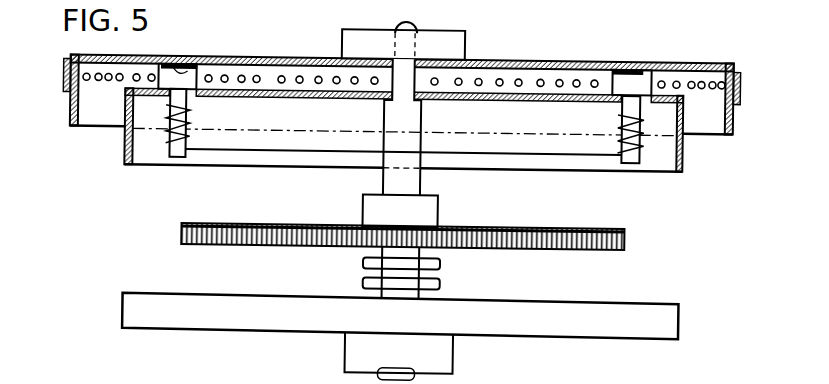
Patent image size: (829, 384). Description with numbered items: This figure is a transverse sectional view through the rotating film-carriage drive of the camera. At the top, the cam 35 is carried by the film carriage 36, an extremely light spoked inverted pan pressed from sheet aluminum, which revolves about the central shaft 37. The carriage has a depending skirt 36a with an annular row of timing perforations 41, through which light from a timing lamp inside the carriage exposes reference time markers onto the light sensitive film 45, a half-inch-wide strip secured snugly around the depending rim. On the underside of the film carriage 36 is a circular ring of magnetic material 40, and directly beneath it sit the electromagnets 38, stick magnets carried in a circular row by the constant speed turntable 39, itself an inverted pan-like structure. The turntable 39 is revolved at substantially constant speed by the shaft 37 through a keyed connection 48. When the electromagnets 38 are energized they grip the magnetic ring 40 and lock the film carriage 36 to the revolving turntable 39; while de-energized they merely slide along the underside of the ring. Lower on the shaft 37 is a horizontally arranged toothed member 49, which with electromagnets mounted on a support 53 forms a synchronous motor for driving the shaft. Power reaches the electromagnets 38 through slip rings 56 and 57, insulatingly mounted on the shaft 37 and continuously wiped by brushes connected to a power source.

The cam 35 is at (455, 50).
The film carriage 36 is at (696, 61).
The depending skirt 36a is at (70, 127).
The shaft 37 is at (416, 27).
The electromagnets 38 is at (640, 77).
The constant speed turntable 39 is at (292, 101).
The magnetic ring 40 is at (186, 69).
The timing perforations 41 is at (68, 85).
The light sensitive film 45 is at (68, 67).
The keyed connection 48 is at (392, 102).
The toothed member 49 is at (515, 231).
The support 53 is at (632, 315).
The slip ring 56 is at (442, 263).
The slip ring 57 is at (442, 283).